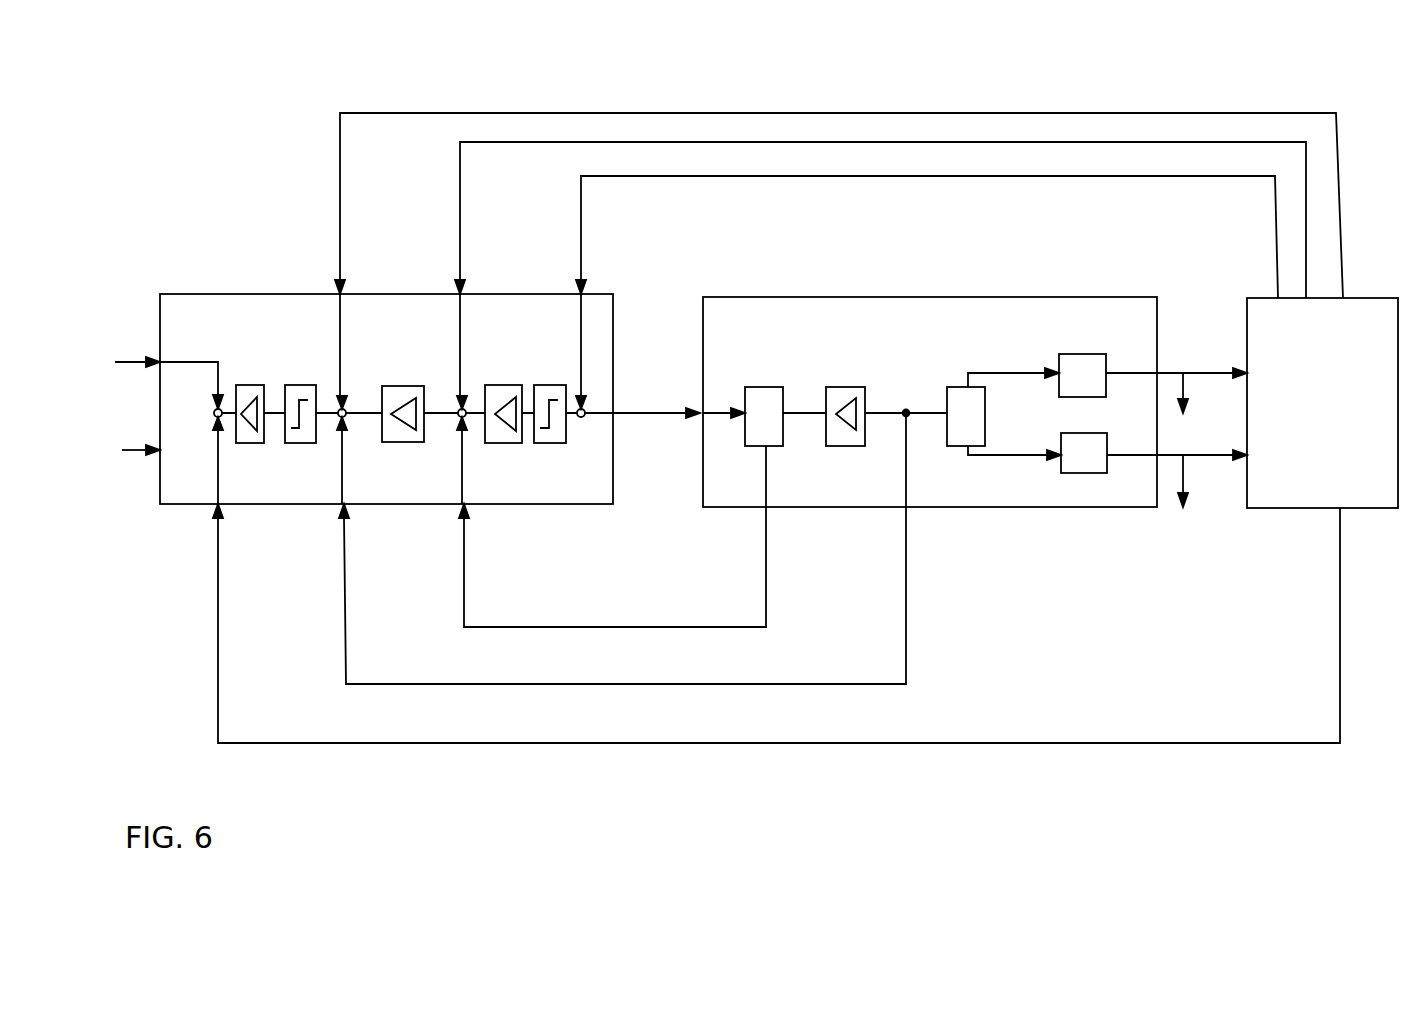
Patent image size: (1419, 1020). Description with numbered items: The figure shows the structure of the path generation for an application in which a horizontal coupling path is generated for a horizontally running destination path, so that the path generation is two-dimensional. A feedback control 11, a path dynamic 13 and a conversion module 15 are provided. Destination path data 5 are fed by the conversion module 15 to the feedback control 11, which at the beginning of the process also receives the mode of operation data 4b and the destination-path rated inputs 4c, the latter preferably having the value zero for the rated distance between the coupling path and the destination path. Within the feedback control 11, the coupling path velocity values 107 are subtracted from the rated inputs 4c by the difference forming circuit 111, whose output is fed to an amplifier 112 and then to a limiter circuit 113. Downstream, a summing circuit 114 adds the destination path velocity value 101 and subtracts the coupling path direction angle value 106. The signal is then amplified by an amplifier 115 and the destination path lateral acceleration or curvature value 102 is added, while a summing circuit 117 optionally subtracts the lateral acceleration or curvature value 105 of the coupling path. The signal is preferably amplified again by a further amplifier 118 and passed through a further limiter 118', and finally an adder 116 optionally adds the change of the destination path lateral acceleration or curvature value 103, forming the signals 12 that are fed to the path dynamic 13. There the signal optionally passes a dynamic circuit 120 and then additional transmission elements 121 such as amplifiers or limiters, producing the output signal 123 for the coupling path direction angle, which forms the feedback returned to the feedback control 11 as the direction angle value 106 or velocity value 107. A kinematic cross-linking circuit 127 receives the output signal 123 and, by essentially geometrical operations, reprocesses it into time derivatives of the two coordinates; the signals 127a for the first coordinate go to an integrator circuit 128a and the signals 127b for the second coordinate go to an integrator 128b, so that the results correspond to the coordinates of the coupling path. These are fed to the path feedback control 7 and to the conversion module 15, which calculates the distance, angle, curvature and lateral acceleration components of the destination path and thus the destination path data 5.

The destination path data 5 is at (190, 107).
The mode of operation data 4b is at (122, 362).
The destination-path rated inputs 4c is at (121, 452).
The feedback control 11 is at (201, 329).
The difference forming circuit 111 is at (214, 416).
The amplifier 112 is at (243, 385).
The limiter circuit 113 is at (300, 385).
The summing circuit 114 is at (340, 421).
The amplifier 115 is at (396, 386).
The adder 116 is at (582, 421).
The summing circuit 117 is at (456, 426).
The further amplifier 118 is at (501, 388).
The further limiter 118' is at (550, 388).
The signals fed to the path dynamic 12 is at (633, 416).
The path dynamic 13 is at (743, 332).
The dynamic circuit 120 is at (645, 543).
The additional transmission elements 121 is at (840, 387).
The output signal 123 is at (907, 411).
The kinematic cross-linking circuit 127 is at (953, 387).
The signals for the first dimension 127a is at (992, 374).
The signals for the second dimension 127b is at (995, 462).
The integrator circuit 128a is at (1085, 345).
The integrator 128b is at (1082, 479).
The path feedback control 7 is at (1190, 453).
The conversion module 15 is at (1291, 344).
The destination path velocity value 101 is at (341, 232).
The destination path lateral acceleration or curvature value 102 is at (462, 233).
The change of destination path lateral acceleration or curvature value 103 is at (584, 235).
The lateral acceleration or curvature value of the coupling path 105 is at (593, 628).
The coupling path direction angle value 106 is at (593, 685).
The coupling path velocity value 107 is at (593, 744).